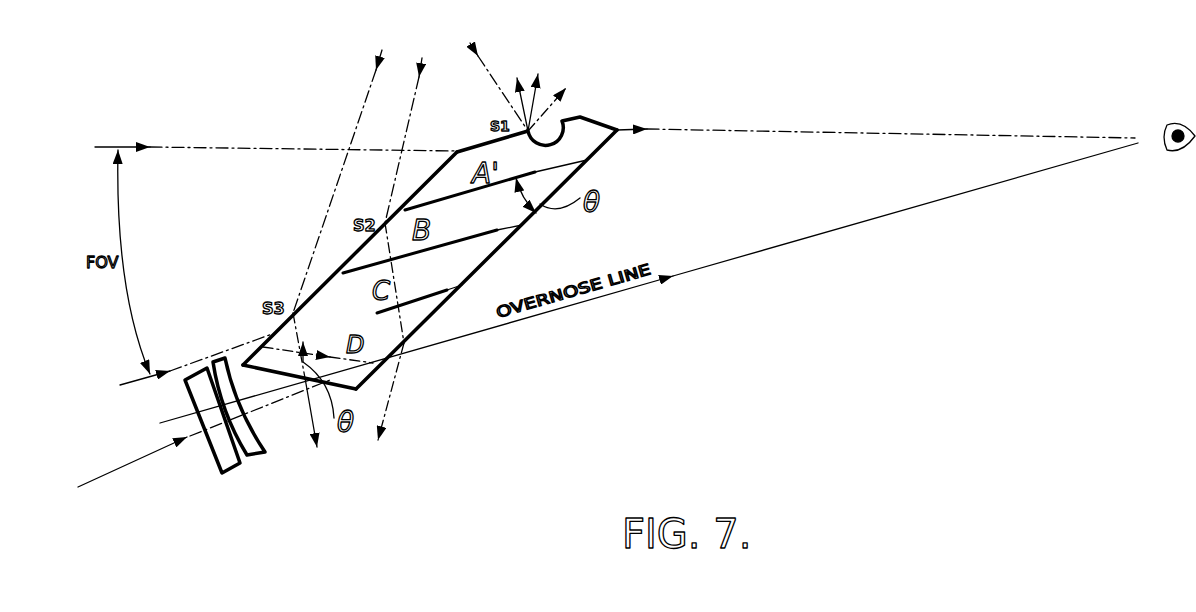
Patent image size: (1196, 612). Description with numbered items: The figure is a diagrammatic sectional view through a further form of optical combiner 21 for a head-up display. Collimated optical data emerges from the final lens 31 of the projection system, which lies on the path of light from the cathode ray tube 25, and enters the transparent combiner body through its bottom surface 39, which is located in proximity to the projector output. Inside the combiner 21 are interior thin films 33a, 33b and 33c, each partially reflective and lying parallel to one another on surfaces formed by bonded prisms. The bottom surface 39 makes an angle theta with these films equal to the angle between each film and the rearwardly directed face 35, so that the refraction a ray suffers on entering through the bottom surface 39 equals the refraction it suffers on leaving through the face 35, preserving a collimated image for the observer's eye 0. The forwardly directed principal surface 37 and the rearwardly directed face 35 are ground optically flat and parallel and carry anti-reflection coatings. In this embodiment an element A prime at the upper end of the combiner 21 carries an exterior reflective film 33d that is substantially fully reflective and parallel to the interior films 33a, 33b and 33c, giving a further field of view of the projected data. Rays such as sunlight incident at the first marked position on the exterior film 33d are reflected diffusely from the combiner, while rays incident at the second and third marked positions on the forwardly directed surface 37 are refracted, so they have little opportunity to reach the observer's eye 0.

The observer's eye 0 is at (1163, 133).
The optical combiner 21 is at (607, 152).
The cathode ray tube 25 is at (203, 440).
The final lens 31 is at (237, 452).
The thin film 33a is at (380, 314).
The thin film 33b is at (440, 248).
The thin film 33c is at (480, 193).
The exterior reflective film 33d is at (563, 120).
The rearwardly directed face 35 is at (585, 163).
The forwardly directed principal surface 37 is at (278, 330).
The bottom surface 39 is at (279, 373).